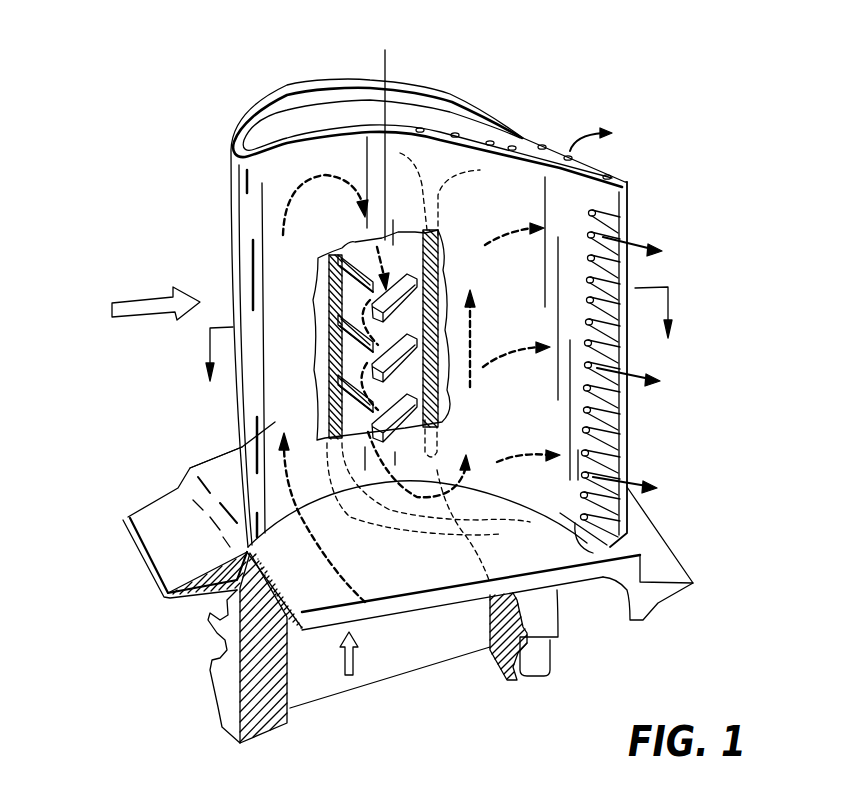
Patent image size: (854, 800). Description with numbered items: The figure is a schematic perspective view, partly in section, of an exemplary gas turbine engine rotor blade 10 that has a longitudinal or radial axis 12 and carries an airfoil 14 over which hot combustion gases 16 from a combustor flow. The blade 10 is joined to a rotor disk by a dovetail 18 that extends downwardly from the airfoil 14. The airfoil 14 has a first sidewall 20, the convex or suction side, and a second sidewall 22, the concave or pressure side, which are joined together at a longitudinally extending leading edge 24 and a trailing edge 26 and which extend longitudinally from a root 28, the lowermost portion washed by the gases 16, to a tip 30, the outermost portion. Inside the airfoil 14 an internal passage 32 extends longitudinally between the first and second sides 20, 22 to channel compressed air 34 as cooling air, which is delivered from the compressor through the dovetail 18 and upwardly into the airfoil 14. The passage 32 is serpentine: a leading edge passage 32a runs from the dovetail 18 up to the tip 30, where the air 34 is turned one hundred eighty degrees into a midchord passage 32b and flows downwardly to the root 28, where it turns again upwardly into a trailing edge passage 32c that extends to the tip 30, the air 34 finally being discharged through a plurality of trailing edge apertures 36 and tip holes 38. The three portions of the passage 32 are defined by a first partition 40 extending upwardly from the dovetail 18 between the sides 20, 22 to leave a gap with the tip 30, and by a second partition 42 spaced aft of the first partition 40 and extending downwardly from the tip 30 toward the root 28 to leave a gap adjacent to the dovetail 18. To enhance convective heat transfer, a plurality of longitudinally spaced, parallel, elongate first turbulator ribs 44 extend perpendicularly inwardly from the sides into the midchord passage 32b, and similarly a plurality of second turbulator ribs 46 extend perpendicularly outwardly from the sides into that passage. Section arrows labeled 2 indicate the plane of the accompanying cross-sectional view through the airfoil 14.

The gas turbine engine rotor blade 10 is at (524, 124).
The longitudinal or radial axis 12 is at (386, 72).
The airfoil 14 is at (237, 173).
The hot combustion gases 16 is at (140, 300).
The dovetail 18 is at (225, 630).
The first sidewall 20 is at (245, 402).
The second sidewall 22 is at (242, 440).
The leading edge 24 is at (240, 197).
The trailing edge 26 is at (626, 201).
The root 28 is at (577, 553).
The tip 30 is at (590, 165).
The internal passage 32 is at (392, 363).
The leading edge passage 32a is at (305, 668).
The midchord passage 32b is at (419, 377).
The trailing edge passage 32c is at (493, 532).
The compressed air 34 is at (380, 637).
The trailing edge apertures 36 is at (607, 437).
The tip holes 38 is at (542, 147).
The first partition 40 is at (345, 302).
The second partition 42 is at (433, 330).
The first turbulator ribs 44 is at (348, 358).
The second turbulator ribs 46 is at (410, 292).
The section line 2- 2 is at (441, 348).